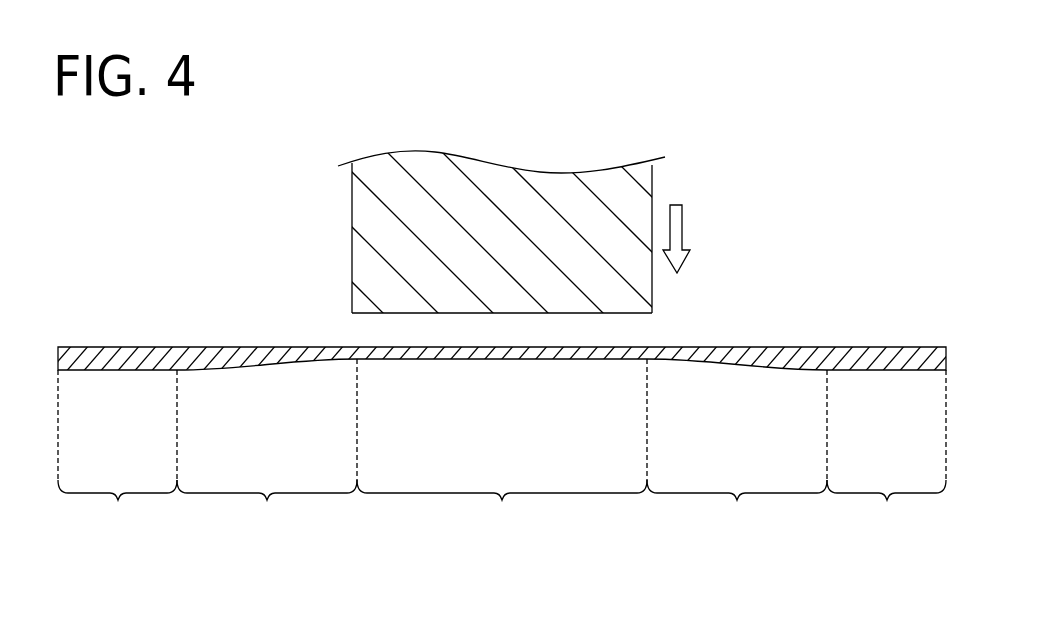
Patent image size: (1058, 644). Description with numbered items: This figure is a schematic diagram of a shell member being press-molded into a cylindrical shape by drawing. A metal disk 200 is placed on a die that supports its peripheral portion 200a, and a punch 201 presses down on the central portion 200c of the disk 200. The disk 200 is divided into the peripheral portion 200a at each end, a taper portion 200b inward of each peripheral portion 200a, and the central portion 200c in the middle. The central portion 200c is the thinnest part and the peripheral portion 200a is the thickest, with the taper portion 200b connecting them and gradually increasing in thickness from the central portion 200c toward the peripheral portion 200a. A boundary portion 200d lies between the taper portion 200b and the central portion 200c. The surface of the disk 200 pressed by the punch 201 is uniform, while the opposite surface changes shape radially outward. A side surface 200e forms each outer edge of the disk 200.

The metal disk 200 is at (735, 330).
The punch 201 is at (352, 210).
The peripheral portion 200a is at (502, 505).
The taper portion 200b is at (502, 505).
The central portion 200c is at (502, 505).
The boundary portion 200d is at (650, 498).
The side surface 200e is at (58, 358).